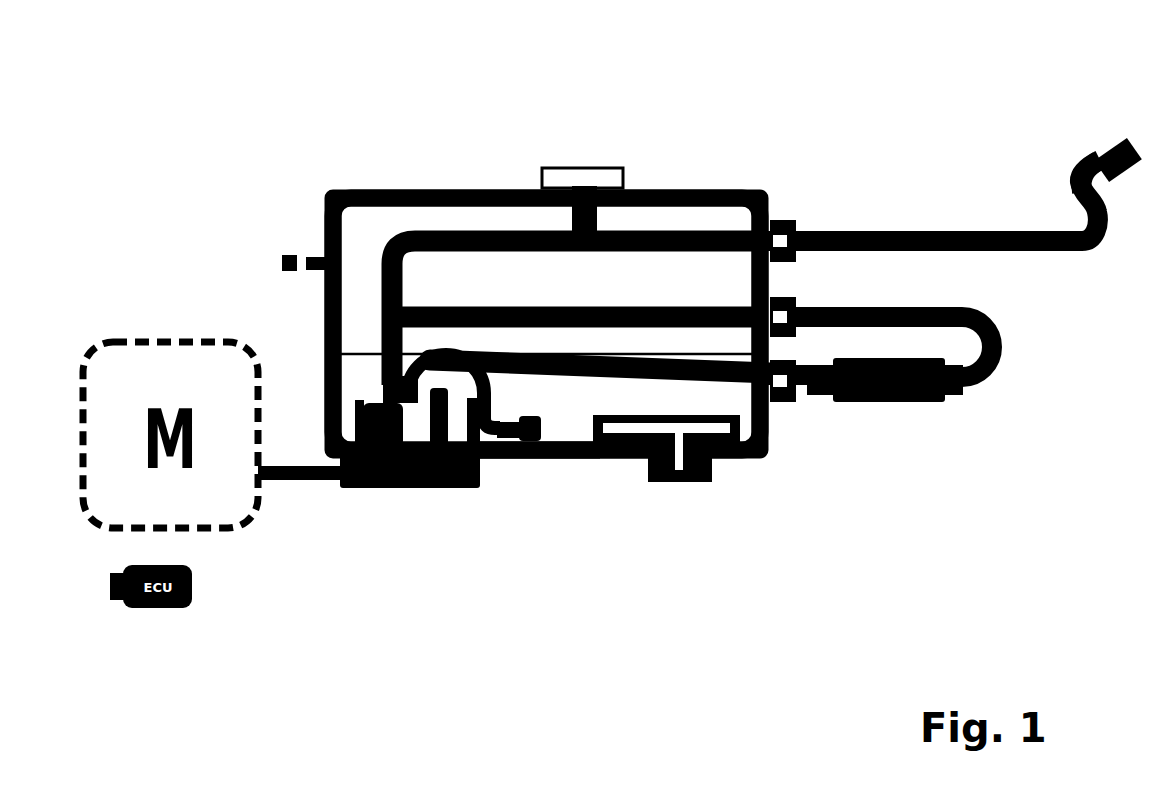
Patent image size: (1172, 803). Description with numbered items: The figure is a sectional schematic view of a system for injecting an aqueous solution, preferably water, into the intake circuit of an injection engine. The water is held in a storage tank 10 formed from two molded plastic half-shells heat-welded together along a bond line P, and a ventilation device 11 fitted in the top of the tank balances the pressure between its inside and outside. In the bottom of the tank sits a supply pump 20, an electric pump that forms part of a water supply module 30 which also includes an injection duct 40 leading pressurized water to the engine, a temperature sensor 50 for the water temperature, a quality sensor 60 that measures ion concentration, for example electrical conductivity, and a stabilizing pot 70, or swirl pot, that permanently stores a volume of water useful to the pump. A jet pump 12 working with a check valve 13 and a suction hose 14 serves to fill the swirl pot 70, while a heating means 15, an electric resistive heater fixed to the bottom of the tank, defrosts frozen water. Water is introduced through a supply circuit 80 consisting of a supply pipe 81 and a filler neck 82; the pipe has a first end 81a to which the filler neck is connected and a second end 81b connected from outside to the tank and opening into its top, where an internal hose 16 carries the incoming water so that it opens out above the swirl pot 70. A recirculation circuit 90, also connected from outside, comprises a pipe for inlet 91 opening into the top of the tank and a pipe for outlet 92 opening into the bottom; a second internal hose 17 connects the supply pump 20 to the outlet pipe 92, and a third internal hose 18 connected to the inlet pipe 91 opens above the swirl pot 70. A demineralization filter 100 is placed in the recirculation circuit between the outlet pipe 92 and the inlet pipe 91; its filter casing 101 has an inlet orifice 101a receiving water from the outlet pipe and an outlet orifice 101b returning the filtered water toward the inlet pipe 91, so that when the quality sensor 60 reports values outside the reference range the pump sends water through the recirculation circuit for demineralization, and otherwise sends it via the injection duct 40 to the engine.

The storage tank 10 is at (384, 170).
The ventilation device 11 is at (578, 177).
The jet pump 12 is at (560, 457).
The check valve 13 is at (423, 453).
The suction hose 14 is at (503, 457).
The heating means 15 is at (680, 482).
The internal hose 16 is at (640, 232).
The second internal hose 17 is at (725, 365).
The third internal hose 18 is at (690, 307).
The supply pump 20 is at (370, 450).
The water supply module 30 is at (417, 505).
The injection duct 40 is at (298, 472).
The temperature sensor 50 is at (450, 452).
The quality sensor 60 is at (487, 453).
The stabilizing pot 70 is at (360, 405).
The supply circuit 80 is at (951, 184).
The supply pipe 81 is at (935, 252).
The first end 81a is at (1083, 168).
The second end 81b is at (793, 228).
The filler neck 82 is at (1107, 148).
The recirculation circuit 90 is at (949, 382).
The pipe for inlet 91 is at (865, 303).
The pipe for outlet 92 is at (800, 400).
The filter 100 is at (937, 489).
The filter casing 101 is at (900, 400).
The inlet orifice 101a is at (820, 400).
The outlet orifice 101b is at (1029, 425).
The bond line P is at (385, 350).